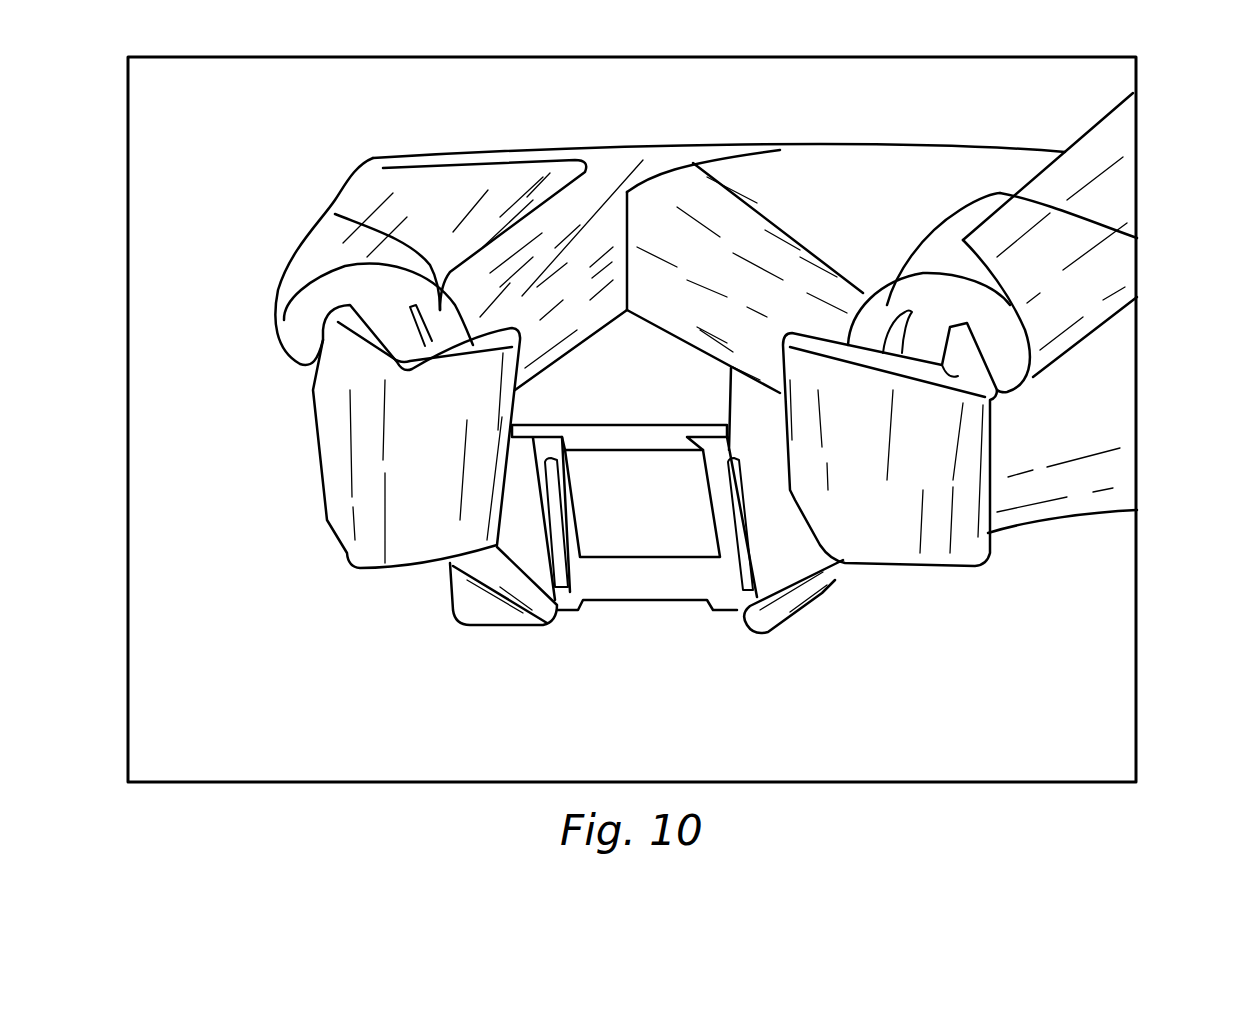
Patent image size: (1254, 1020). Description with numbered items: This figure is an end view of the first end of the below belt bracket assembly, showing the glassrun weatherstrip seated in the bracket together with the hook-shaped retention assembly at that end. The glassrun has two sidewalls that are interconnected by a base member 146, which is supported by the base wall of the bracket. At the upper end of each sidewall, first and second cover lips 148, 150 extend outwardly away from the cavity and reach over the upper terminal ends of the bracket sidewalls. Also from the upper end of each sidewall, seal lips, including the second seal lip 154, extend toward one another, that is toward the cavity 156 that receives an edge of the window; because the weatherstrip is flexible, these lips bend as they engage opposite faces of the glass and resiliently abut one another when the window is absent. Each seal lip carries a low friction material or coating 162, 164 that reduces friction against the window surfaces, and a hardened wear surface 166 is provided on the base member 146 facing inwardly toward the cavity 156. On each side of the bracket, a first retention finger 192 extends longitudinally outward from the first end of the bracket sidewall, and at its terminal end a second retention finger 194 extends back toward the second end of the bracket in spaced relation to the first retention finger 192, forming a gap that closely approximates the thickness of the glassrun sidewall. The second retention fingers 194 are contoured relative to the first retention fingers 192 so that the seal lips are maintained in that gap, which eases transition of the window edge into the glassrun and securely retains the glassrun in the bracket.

The base member 146 is at (643, 528).
The first cover lip 148 is at (300, 340).
The second cover lip 150 is at (1010, 360).
The second seal lip 154 is at (1100, 236).
The cavity 156 is at (335, 214).
The low friction material or coating 162 is at (573, 240).
The low friction material or coating 164 is at (760, 257).
The hardened wear surface 166 is at (653, 523).
The first retention finger 192 is at (335, 450).
The second retention finger 194 is at (428, 513).